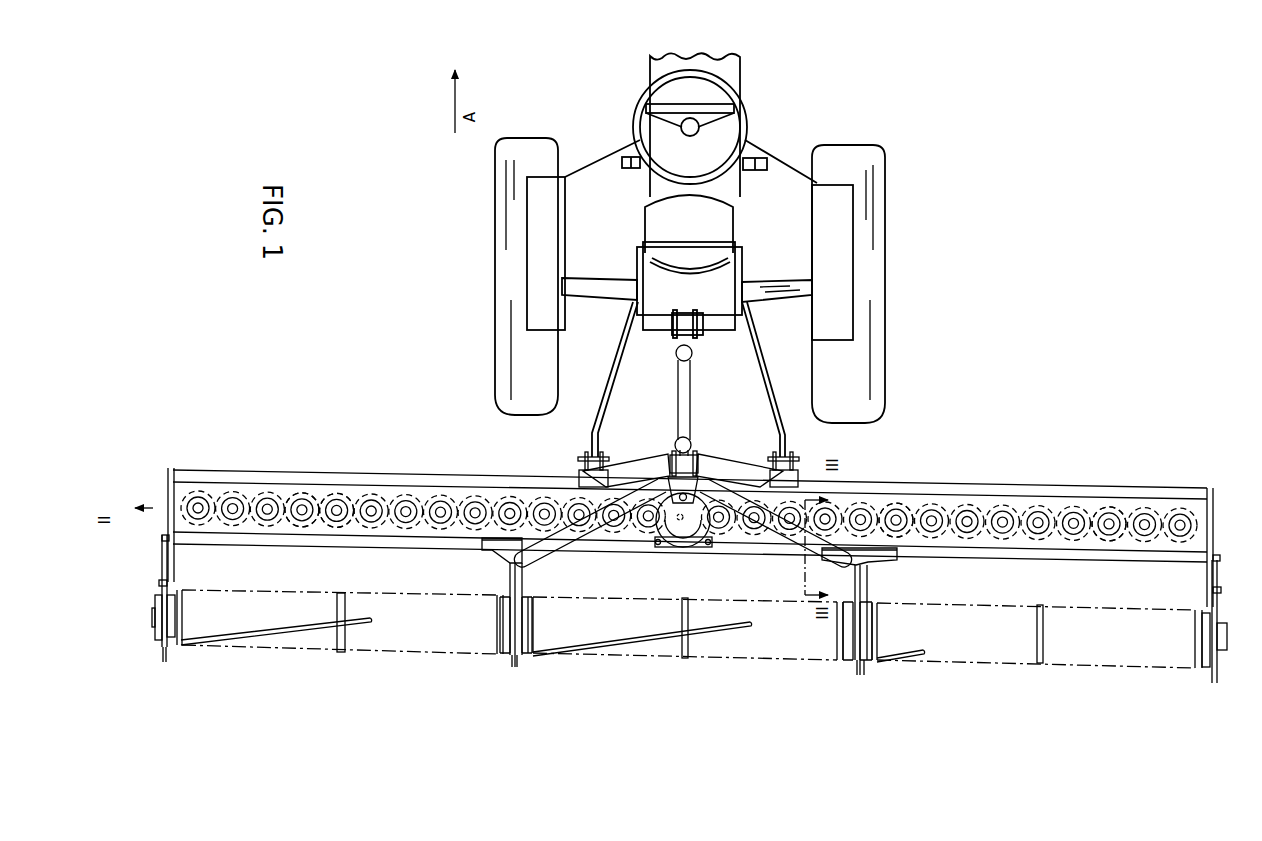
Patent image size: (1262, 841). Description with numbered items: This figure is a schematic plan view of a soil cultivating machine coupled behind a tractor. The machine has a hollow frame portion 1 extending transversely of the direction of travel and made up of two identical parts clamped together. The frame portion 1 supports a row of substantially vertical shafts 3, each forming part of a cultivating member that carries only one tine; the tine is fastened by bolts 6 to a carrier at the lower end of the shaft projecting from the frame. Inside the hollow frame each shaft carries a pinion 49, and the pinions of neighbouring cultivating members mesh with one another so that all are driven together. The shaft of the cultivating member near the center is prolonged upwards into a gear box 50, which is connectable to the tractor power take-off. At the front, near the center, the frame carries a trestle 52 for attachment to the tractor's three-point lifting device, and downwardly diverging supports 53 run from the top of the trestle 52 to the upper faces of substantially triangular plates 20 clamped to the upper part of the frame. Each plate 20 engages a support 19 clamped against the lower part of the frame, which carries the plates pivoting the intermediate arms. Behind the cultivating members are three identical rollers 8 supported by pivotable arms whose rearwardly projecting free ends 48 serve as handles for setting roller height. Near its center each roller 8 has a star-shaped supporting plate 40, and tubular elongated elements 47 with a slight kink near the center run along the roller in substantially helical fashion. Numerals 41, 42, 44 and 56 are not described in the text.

The hollow frame portion 1 is at (493, 468).
The shaft 3 is at (430, 498).
The bolt 6 is at (160, 583).
The supporting member (roller) 8 is at (256, 654).
The support 19 is at (483, 549).
The plate 20 is at (492, 551).
The supporting plate 40 is at (180, 650).
The scraper 41 is at (360, 627).
The side plate 42 is at (167, 473).
The coupling member 44 is at (162, 538).
The tubular elongated element 47 is at (532, 578).
The free end 48 is at (178, 567).
The pinion 49 is at (337, 482).
The gear box 50 is at (690, 540).
The trestle 52 is at (731, 460).
The support 53 is at (590, 541).
The pivot post 56 is at (505, 567).